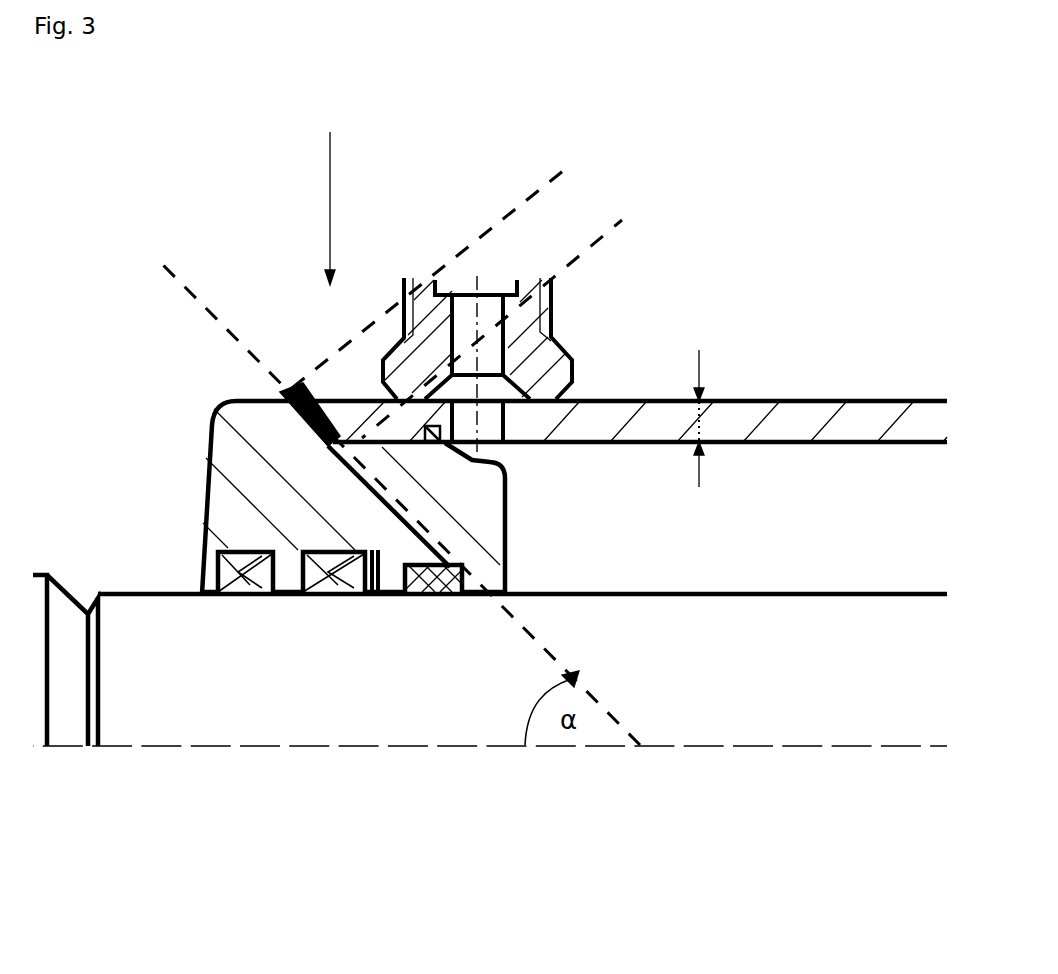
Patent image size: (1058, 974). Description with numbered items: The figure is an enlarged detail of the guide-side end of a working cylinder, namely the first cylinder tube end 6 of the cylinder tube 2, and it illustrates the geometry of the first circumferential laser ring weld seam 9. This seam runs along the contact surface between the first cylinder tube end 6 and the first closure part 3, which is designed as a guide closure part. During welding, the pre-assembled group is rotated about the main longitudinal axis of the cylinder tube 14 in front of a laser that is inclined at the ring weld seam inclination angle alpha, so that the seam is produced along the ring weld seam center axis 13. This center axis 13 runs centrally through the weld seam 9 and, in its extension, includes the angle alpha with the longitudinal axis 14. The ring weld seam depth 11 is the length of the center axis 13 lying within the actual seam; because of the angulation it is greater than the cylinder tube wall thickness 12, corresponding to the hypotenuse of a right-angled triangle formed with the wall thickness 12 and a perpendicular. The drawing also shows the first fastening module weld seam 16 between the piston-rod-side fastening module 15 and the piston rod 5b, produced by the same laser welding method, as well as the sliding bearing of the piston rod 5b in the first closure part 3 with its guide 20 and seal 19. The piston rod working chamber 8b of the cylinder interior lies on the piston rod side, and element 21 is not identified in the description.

The cylinder tube 2 is at (866, 400).
The first closure part 3 is at (243, 475).
The piston rod 5b is at (767, 665).
The first cylinder tube end 6 is at (329, 194).
The piston rod working chamber 8b is at (882, 547).
The first circumferential laser ring weld seam 9 is at (283, 413).
The ring weld seam depth 11 is at (620, 222).
The cylinder tube wall thickness 12 is at (738, 401).
The ring weld seam center axis 13 is at (229, 336).
The main longitudinal axis of the cylinder tube 14 is at (308, 748).
The piston-rod-side fastening module 15 is at (62, 722).
The first fastening module weld seam 16 is at (92, 732).
The seal 19 is at (270, 596).
The guide 20 is at (438, 595).
The fastening element 21 is at (440, 443).